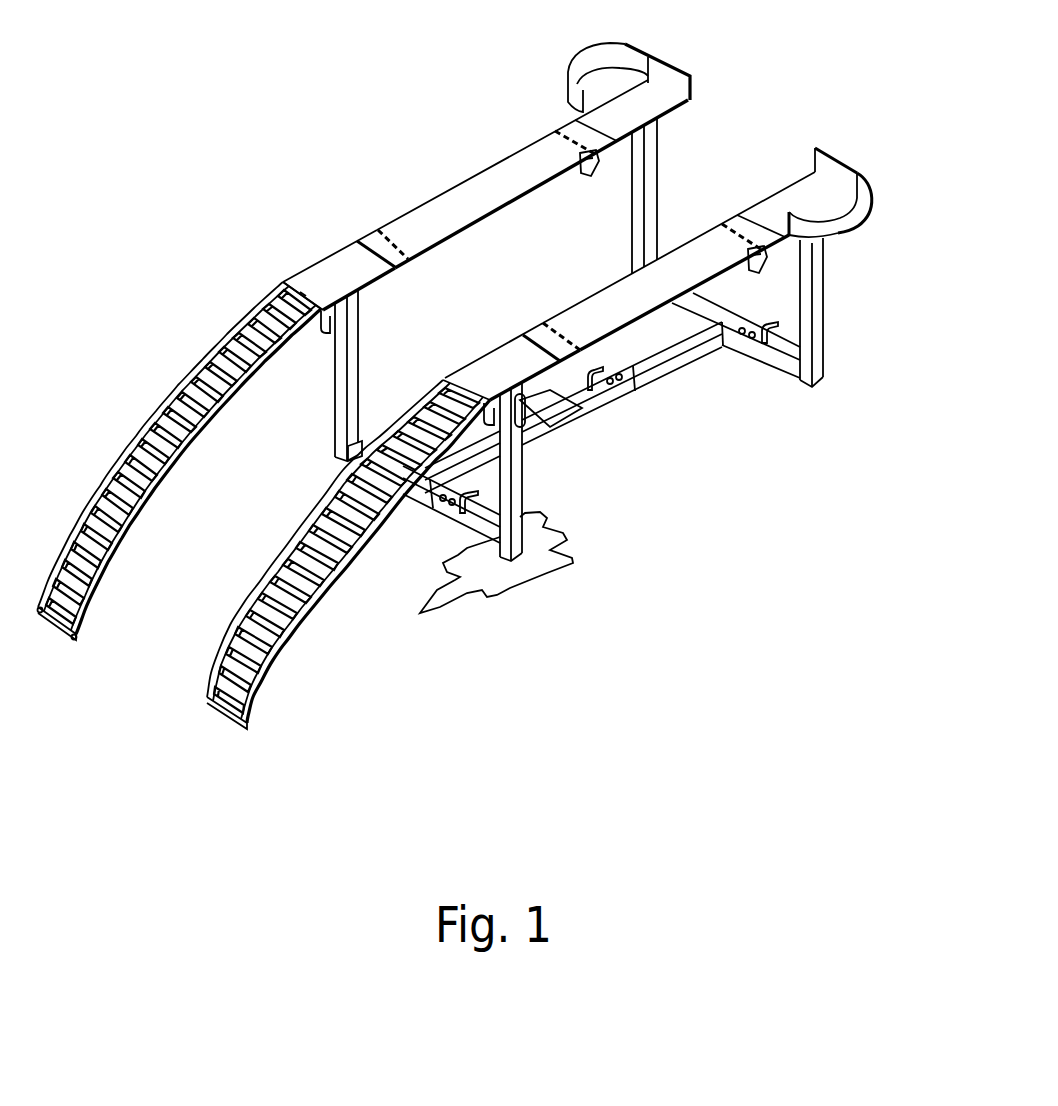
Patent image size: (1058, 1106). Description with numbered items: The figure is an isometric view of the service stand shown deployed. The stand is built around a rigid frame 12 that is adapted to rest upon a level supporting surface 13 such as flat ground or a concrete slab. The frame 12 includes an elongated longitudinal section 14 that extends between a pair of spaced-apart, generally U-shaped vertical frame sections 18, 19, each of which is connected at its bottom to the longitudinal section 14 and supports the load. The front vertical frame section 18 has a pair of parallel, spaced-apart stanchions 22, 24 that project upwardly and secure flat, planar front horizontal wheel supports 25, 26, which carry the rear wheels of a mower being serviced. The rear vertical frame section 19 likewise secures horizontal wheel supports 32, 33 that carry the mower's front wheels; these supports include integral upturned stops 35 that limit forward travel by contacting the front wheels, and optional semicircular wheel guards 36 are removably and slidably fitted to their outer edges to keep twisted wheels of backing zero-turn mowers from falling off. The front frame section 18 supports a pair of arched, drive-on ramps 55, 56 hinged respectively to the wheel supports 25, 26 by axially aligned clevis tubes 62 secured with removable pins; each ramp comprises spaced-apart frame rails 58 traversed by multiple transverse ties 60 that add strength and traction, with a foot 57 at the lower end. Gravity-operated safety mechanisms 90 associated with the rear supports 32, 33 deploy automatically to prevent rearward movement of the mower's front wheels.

The rigid frame 12 is at (556, 498).
The supporting surface 13 is at (516, 580).
The longitudinal section 14 is at (616, 406).
The vertical frame section 18 is at (373, 347).
The vertical frame section 19 is at (668, 198).
The stanchion 22 is at (338, 388).
The stanchion 24 is at (520, 464).
The horizontal wheel support 25 is at (325, 275).
The horizontal wheel support 26 is at (507, 362).
The horizontal wheel support 32 is at (652, 108).
The horizontal wheel support 33 is at (797, 188).
The upturned stop 35 is at (662, 57).
The wheel guard 36 is at (838, 225).
The arched ramp 55 is at (142, 412).
The arched ramp 56 is at (286, 543).
The ramp foot near side 57 is at (76, 636).
The frame rail 58 is at (40, 613).
The transverse tie 60 is at (118, 531).
The clevis tube 62 is at (282, 288).
The safety mechanism 90 is at (593, 183).